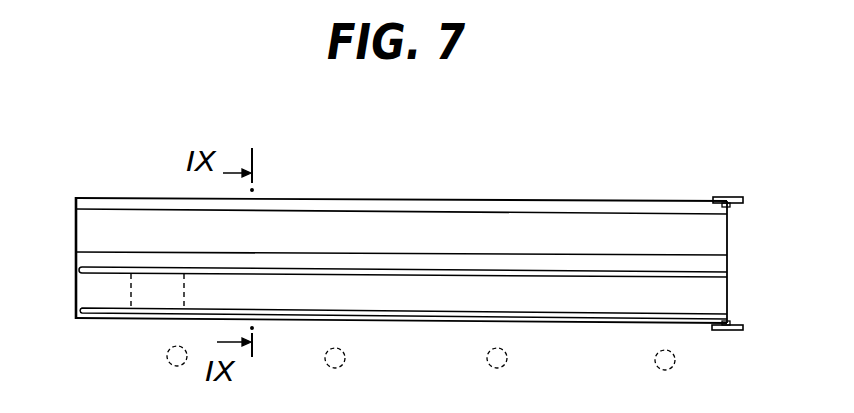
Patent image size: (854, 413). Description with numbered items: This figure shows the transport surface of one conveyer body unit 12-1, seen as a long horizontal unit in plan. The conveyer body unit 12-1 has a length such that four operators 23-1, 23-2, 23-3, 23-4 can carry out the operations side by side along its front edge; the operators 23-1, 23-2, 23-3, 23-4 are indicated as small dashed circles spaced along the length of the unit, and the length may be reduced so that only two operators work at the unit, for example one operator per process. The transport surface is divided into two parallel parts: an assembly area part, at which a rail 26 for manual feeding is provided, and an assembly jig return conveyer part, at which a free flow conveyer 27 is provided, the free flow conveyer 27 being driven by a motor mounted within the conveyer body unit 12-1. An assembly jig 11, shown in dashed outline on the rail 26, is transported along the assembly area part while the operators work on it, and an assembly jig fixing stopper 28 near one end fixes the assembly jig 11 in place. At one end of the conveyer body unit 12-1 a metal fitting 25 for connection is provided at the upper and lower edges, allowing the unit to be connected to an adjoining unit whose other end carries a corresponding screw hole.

The conveyer body unit 12-1 is at (617, 151).
The free flow conveyer 27 is at (552, 207).
The assembly jig fixing stopper 28 is at (177, 322).
The rail 26 is at (555, 327).
The assembly jig 11 is at (184, 292).
The metal fitting 25 is at (728, 196).
The operator 23-1 is at (165, 355).
The operator 23-2 is at (346, 356).
The operator 23-3 is at (508, 356).
The operator 23-4 is at (676, 360).